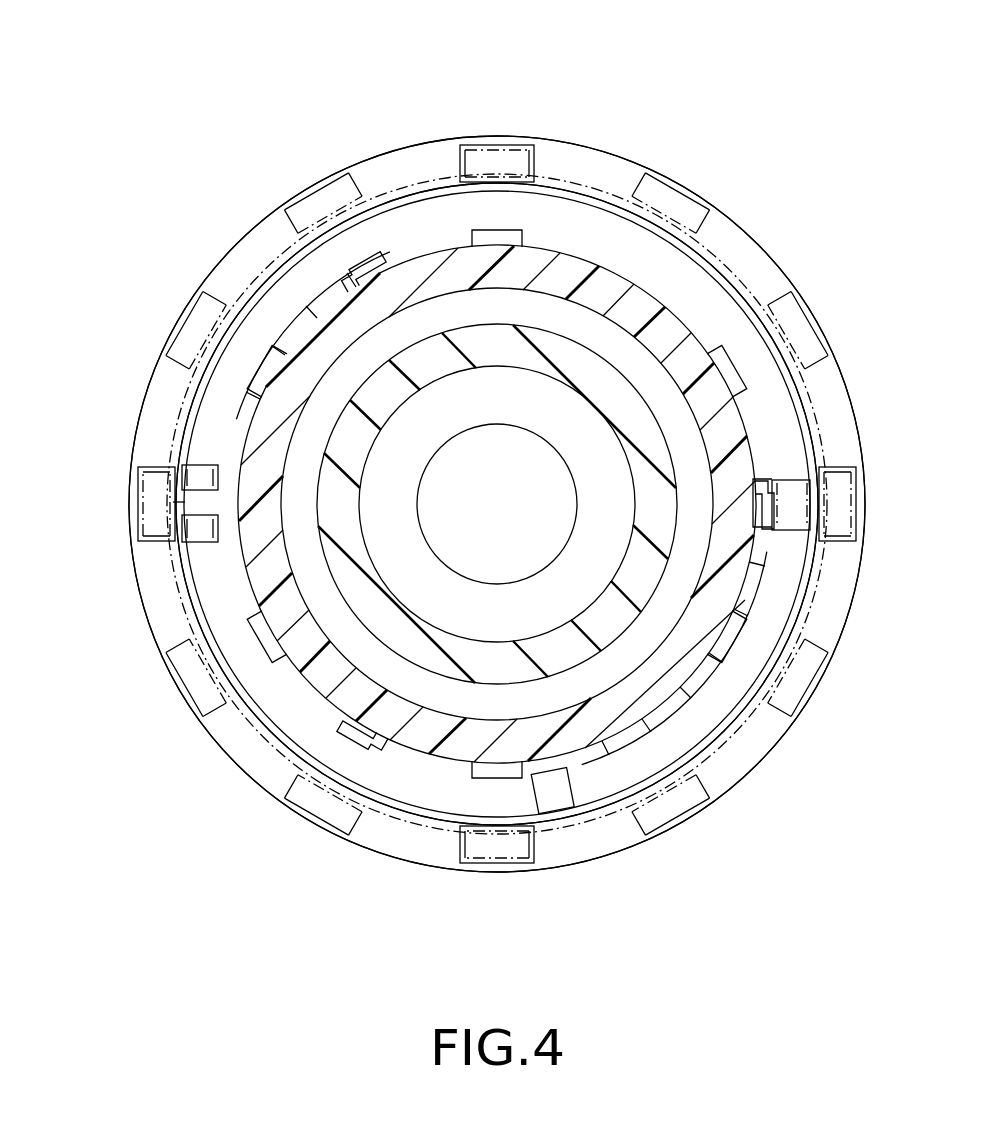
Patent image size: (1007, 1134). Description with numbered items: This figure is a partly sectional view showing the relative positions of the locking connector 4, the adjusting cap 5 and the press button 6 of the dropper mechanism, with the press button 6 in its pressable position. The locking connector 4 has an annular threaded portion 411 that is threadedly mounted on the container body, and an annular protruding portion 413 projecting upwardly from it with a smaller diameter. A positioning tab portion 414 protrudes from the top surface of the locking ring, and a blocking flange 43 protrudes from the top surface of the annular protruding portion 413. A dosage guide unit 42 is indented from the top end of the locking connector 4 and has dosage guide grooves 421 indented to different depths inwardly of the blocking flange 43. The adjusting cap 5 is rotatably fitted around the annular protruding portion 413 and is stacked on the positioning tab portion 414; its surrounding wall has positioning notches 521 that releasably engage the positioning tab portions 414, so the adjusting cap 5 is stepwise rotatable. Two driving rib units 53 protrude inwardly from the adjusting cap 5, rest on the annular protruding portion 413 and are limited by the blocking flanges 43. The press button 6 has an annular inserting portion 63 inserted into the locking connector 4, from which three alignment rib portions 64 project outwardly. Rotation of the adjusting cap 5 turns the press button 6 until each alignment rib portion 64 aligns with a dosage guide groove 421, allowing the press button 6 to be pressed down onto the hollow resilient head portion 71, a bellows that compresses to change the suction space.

The locking connector 4 is at (549, 137).
The annular threaded portion 411 is at (592, 152).
The annular protruding portion 413 is at (712, 303).
The positioning tab portion 414 is at (484, 160).
The dosage guide unit 42 is at (252, 364).
The dosage guide grooves 421 is at (480, 237).
The blocking flange 43 is at (263, 323).
The adjusting cap 5 is at (137, 497).
The driving rib units 53 is at (202, 477).
The positioning notches 521 is at (505, 143).
The press button 6 is at (640, 706).
The annular inserting portion 63 is at (706, 670).
The alignment rib portions 64 is at (362, 285).
The hollow resilient head portion 71 is at (562, 652).